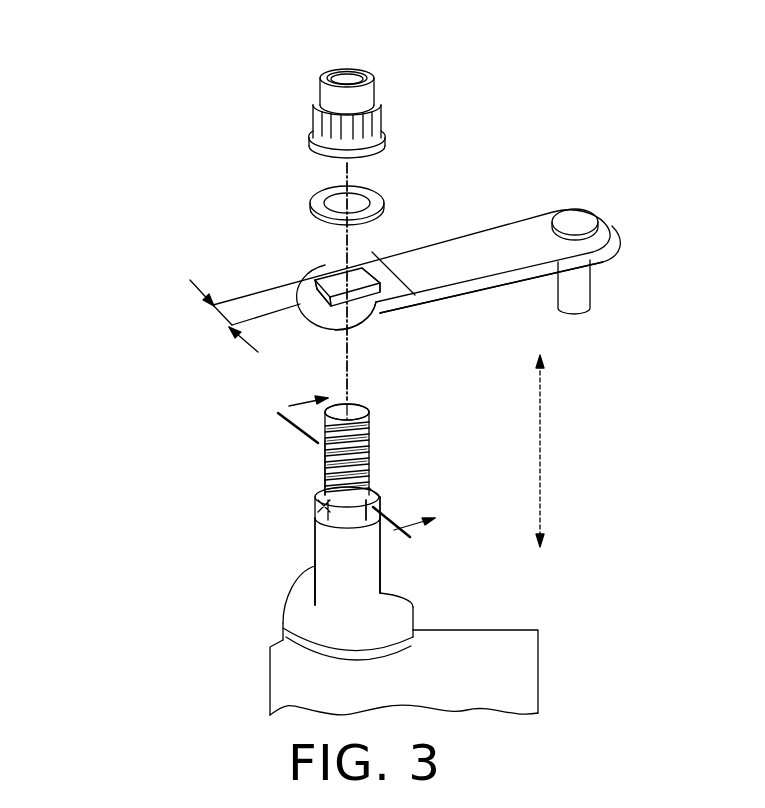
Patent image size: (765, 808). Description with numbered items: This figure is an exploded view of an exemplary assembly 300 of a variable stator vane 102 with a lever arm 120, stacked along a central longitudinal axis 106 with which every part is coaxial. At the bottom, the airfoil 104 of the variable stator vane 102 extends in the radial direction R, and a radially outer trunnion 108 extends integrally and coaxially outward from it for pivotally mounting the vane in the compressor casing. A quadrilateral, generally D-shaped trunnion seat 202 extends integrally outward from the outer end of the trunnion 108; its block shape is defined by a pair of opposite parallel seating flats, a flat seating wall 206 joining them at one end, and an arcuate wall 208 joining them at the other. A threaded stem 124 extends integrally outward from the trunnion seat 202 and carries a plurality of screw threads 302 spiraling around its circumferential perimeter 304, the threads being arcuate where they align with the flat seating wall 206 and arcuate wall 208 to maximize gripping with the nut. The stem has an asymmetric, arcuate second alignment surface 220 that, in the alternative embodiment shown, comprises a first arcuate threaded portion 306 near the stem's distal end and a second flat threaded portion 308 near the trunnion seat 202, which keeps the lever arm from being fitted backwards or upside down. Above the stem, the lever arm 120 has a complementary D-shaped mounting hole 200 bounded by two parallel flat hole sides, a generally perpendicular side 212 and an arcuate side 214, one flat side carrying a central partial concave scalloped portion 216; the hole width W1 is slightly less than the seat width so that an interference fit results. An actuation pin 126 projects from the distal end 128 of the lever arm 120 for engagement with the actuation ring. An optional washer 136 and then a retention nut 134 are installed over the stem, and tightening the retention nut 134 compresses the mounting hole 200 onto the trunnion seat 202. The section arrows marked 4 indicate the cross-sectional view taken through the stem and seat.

The assembly 300 is at (522, 75).
The retention nut 134 is at (383, 125).
The central longitudinal axis 106 is at (352, 173).
The washer 136 is at (310, 200).
The lever arm 120 is at (481, 226).
The distal end of lever arm 128 is at (613, 225).
The actuation pin 126 is at (592, 292).
The mounting hole 200 is at (372, 268).
The perpendicular side 212 is at (318, 283).
The arcuate side 214 is at (380, 280).
The partial concave scalloped portion 216 is at (356, 330).
The width of mounting hole W1 is at (190, 280).
The radial direction R is at (540, 452).
The section line of FIG. 4 is at (356, 467).
The trunnion seat 202 is at (318, 488).
The threaded stem 124 is at (375, 415).
The first arcuate threaded portion 306 is at (365, 432).
The second alignment surface 220 is at (385, 463).
The circumferential perimeter 304 is at (320, 456).
The second flat threaded portion 308 is at (370, 488).
The arcuate wall 208 is at (378, 500).
The screw threads 302 is at (325, 497).
The flat seating wall 206 is at (318, 518).
The outer trunnion 108 is at (312, 566).
The variable stator vane 102 is at (212, 565).
The airfoil 104 is at (505, 628).